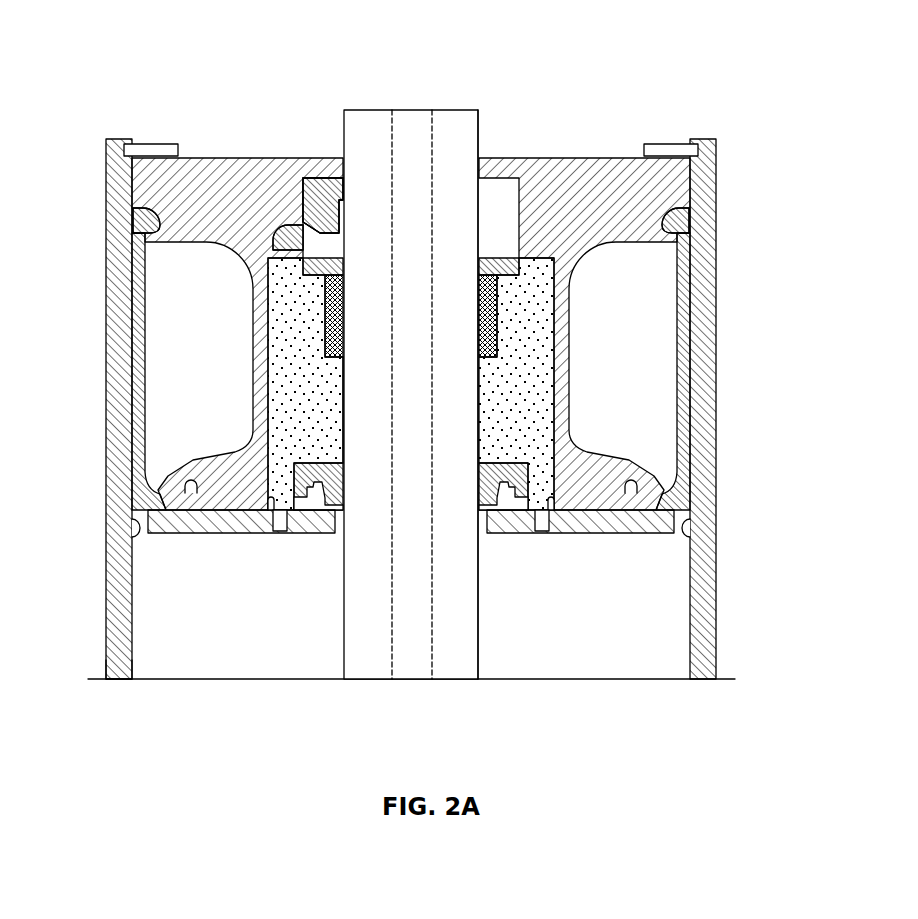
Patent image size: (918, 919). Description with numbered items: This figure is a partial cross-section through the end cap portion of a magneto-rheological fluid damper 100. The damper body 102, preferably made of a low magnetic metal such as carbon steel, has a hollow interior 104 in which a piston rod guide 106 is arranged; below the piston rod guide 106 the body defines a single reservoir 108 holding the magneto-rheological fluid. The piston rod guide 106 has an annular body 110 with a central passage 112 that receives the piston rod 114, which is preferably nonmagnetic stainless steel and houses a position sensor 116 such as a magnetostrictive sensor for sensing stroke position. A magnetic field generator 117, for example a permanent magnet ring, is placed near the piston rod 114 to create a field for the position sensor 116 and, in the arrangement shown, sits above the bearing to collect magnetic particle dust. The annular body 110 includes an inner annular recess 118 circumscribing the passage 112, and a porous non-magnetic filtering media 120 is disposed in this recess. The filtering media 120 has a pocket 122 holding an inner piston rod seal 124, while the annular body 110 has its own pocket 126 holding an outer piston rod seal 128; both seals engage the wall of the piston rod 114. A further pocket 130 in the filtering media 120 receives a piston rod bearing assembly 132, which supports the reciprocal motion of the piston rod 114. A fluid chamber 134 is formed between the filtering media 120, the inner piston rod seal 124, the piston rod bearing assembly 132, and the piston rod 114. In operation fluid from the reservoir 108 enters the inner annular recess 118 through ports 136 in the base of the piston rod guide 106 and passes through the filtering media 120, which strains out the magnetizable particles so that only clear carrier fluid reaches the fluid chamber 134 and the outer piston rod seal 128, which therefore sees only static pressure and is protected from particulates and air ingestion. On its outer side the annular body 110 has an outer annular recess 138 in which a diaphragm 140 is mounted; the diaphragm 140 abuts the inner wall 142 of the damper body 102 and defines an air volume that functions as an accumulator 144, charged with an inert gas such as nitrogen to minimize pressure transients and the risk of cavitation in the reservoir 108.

The magneto-rheological fluid damper 100 is at (450, 80).
The damper body 102 is at (145, 214).
The hollow interior 104 is at (133, 665).
The piston rod guide 106 is at (197, 152).
The single reservoir 108 is at (532, 613).
The annular body 110 is at (617, 155).
The passage 112 is at (343, 172).
The piston rod 114 is at (481, 132).
The position sensor 116 is at (413, 125).
The magnetic field generator 117 is at (503, 263).
The inner annular recess 118 is at (275, 500).
The filtering media 120 is at (295, 357).
The pocket 122 is at (303, 500).
The inner piston rod seal 124 is at (332, 534).
The pocket 126 is at (296, 184).
The outer piston rod seal 128 is at (327, 188).
The pocket 130 is at (327, 325).
The piston rod bearing assembly 132 is at (327, 303).
The fluid chamber 134 is at (342, 422).
The ports 136 is at (547, 520).
The outer annular recess 138 is at (642, 238).
The diaphragm 140 is at (690, 323).
The inner wall 142 is at (692, 530).
The accumulator 144 is at (631, 357).